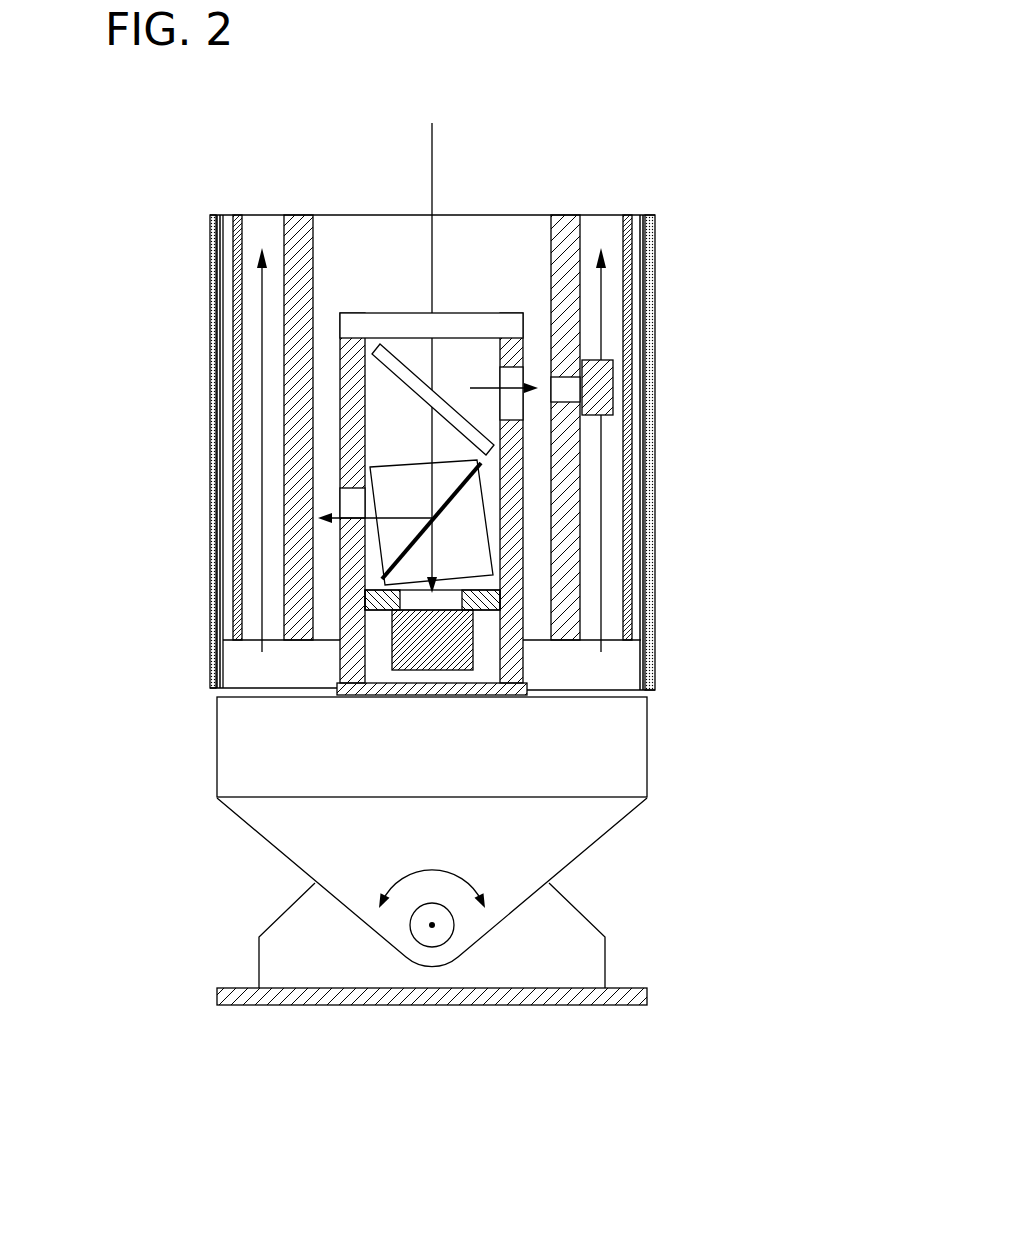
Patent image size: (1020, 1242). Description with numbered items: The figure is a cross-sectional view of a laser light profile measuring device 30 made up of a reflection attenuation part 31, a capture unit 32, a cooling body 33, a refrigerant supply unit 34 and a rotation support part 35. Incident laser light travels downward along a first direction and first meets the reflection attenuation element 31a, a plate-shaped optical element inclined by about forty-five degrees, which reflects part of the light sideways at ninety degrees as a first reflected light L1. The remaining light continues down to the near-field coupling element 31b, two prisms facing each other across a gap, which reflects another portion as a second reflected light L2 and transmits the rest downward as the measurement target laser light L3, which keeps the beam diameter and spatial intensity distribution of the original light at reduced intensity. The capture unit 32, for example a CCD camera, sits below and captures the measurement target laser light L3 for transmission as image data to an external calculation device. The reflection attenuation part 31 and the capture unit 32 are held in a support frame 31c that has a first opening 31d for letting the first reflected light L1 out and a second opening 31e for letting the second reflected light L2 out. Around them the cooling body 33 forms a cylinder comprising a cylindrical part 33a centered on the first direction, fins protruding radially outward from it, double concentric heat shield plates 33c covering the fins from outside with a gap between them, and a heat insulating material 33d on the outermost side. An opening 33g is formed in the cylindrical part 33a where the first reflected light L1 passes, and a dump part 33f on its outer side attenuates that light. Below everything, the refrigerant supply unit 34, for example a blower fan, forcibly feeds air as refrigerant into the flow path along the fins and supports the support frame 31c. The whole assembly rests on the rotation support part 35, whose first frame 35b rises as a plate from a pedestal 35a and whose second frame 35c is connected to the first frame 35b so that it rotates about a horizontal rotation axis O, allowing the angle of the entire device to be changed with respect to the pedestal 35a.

The laser light profile measuring device 30 is at (185, 120).
The reflection attenuation part 31 is at (431, 538).
The reflection attenuation element 31a is at (380, 362).
The near-field coupling element 31b is at (380, 480).
The support frame 31c is at (362, 597).
The first opening 31d is at (513, 408).
The second opening 31e is at (358, 550).
The capture unit 32 is at (455, 660).
The cooling body 33 is at (509, 412).
The cylindrical part 33a is at (566, 215).
The heat shield plate 33c is at (643, 215).
The heat insulating material 33d is at (656, 238).
The dump part 33f is at (600, 378).
The opening 33g is at (578, 400).
The refrigerant supply unit 34 is at (225, 745).
The rotation support part 35 is at (361, 936).
The pedestal 35a is at (283, 1000).
The first frame 35b is at (270, 957).
The second frame 35c is at (278, 828).
The rotation axis O is at (432, 925).
The first reflected light L1 is at (470, 385).
The second reflected light L2 is at (400, 515).
The measurement target laser light L3 is at (433, 556).